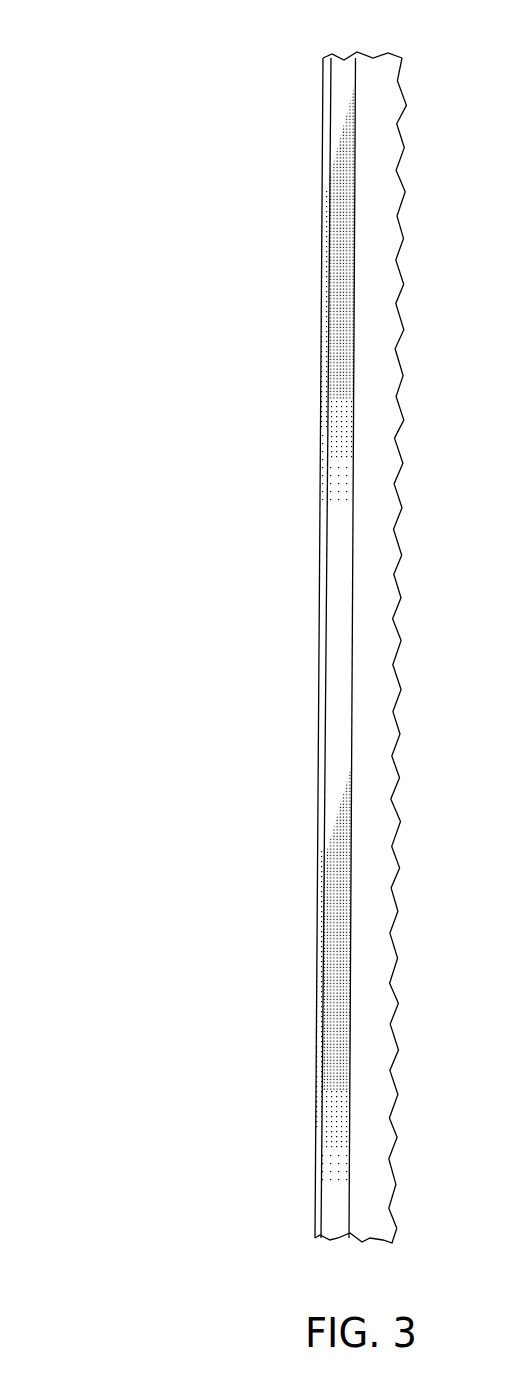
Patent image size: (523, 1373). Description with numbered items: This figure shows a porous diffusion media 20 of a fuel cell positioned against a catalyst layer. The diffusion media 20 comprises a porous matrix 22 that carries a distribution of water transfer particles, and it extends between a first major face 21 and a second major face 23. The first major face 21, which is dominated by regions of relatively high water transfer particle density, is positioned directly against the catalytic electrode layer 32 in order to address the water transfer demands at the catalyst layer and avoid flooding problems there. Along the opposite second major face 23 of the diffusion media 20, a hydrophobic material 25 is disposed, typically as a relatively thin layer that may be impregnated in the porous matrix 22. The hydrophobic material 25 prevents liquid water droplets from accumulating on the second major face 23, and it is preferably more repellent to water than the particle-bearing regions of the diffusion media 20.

The porous diffusion media 20 is at (243, 627).
The first major face 21 is at (352, 700).
The porous matrix 22 is at (342, 64).
The second major face 23 is at (320, 538).
The hydrophobic material 25 is at (327, 647).
The catalytic electrode layer 32 is at (393, 1046).